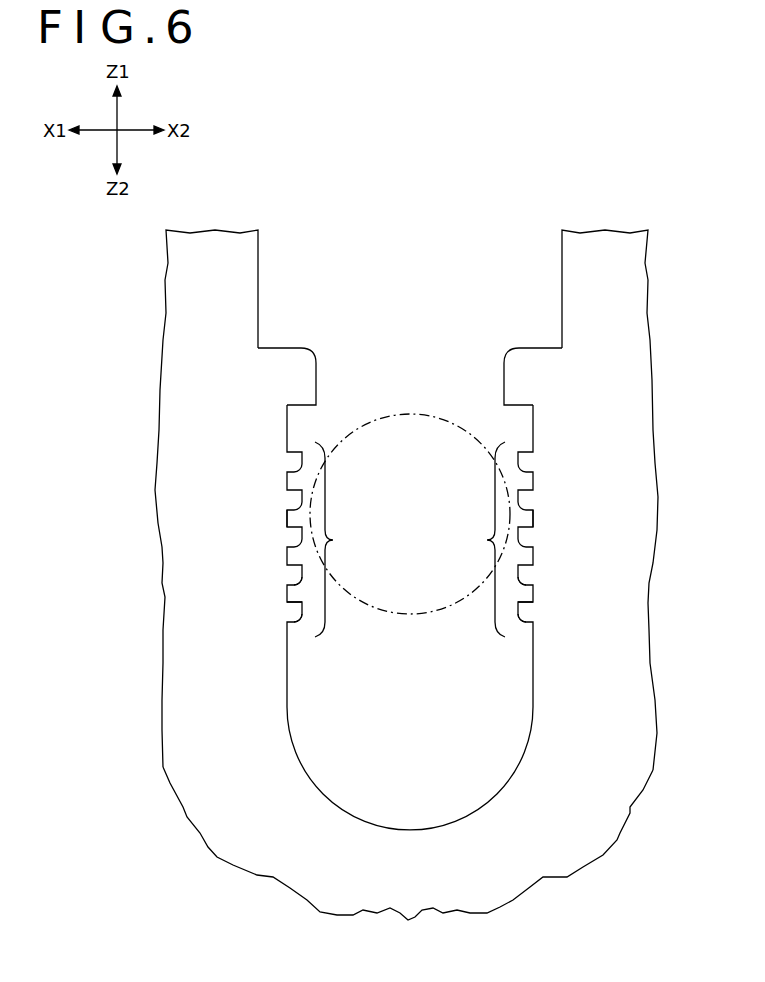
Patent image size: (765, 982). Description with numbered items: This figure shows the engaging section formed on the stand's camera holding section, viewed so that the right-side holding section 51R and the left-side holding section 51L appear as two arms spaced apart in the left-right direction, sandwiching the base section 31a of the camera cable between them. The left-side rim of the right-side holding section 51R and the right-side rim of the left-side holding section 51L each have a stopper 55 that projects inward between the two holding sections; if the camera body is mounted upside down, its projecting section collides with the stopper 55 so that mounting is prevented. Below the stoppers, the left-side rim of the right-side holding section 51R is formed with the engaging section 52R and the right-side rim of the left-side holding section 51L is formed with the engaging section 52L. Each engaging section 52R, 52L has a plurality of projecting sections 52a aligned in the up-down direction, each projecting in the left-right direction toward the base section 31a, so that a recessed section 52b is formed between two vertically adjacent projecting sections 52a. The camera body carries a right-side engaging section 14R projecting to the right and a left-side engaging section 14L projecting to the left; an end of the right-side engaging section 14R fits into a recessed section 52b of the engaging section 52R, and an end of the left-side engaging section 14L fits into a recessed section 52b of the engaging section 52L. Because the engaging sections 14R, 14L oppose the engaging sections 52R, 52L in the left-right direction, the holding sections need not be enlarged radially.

The right-side holding section 51R is at (217, 240).
The left-side holding section 51L is at (608, 242).
The stopper 55 is at (272, 357).
The base section 31a is at (412, 408).
The engaging section 52R is at (336, 556).
The engaging section 52L is at (489, 556).
The right-side engaging section 14R is at (287, 527).
The left-side engaging section 14L is at (533, 527).
The projecting section 52a is at (290, 615).
The recessed section 52b is at (297, 593).